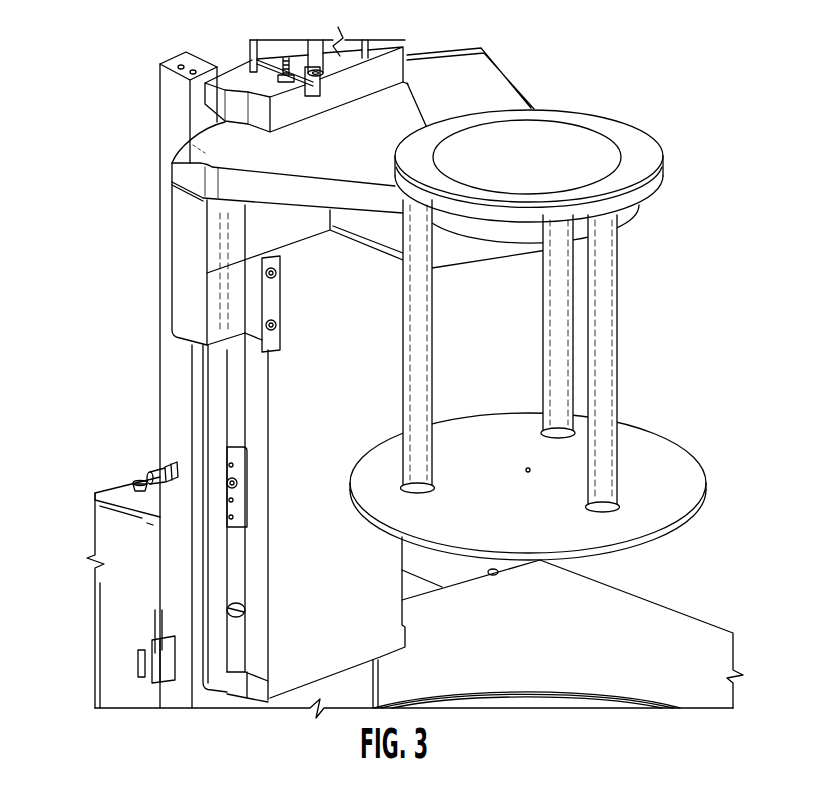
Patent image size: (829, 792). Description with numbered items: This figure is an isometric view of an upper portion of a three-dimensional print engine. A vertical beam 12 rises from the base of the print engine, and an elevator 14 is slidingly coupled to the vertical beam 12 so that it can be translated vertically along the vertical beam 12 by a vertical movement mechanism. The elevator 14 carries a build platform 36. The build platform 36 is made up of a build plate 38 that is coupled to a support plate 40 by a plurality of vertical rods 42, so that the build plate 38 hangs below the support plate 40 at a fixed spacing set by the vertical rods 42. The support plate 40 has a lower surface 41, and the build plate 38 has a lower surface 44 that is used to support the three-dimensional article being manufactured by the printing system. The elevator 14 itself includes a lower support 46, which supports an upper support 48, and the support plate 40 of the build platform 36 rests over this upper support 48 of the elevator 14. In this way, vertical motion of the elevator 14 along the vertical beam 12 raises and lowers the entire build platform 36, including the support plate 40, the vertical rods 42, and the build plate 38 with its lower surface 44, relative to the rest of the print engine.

The vertical beam 12 is at (172, 570).
The elevator 14 is at (556, 66).
The build platform 36 is at (493, 393).
The build plate 38 is at (545, 500).
The support plate 40 is at (632, 153).
The lower surface 41 is at (628, 222).
The vertical rods 42 is at (598, 405).
The lower surface 44 is at (648, 542).
The lower support 46 is at (382, 238).
The upper support 48 is at (292, 188).